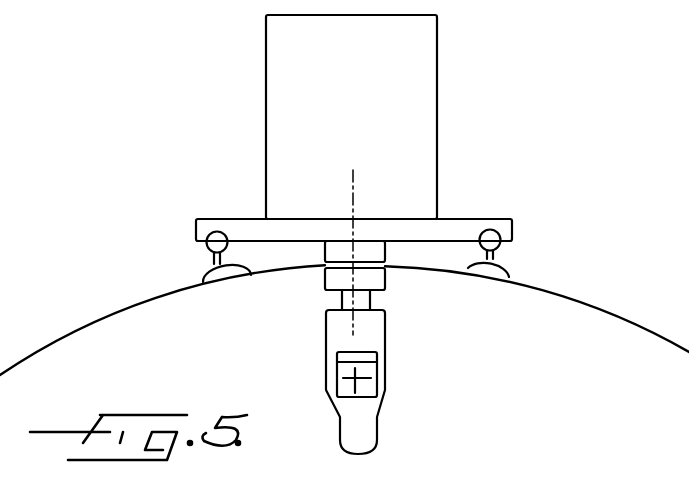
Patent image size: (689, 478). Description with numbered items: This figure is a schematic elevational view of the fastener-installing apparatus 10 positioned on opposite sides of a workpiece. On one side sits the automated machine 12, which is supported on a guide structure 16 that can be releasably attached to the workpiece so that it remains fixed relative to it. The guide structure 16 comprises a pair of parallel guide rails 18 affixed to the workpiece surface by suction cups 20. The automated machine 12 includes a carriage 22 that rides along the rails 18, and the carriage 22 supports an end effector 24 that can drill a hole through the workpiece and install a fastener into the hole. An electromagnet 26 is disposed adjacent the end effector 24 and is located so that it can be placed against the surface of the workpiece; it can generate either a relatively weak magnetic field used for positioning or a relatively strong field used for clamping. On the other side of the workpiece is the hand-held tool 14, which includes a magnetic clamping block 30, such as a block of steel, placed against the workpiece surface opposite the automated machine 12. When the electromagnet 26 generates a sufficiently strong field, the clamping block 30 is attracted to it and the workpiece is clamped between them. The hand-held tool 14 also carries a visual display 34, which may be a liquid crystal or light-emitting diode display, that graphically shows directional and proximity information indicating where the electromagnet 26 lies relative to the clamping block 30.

The apparatus 10 is at (156, 67).
The automated machine 12 is at (440, 67).
The hand-held tool 14 is at (318, 333).
The guide structure 16 is at (516, 249).
The guide rails 18 is at (207, 236).
The suction cups 20 is at (204, 276).
The carriage 22 is at (243, 222).
The end effector 24 is at (377, 116).
The electromagnet 26 is at (343, 249).
The magnetic clamping block 30 is at (386, 279).
The visual display 34 is at (370, 370).